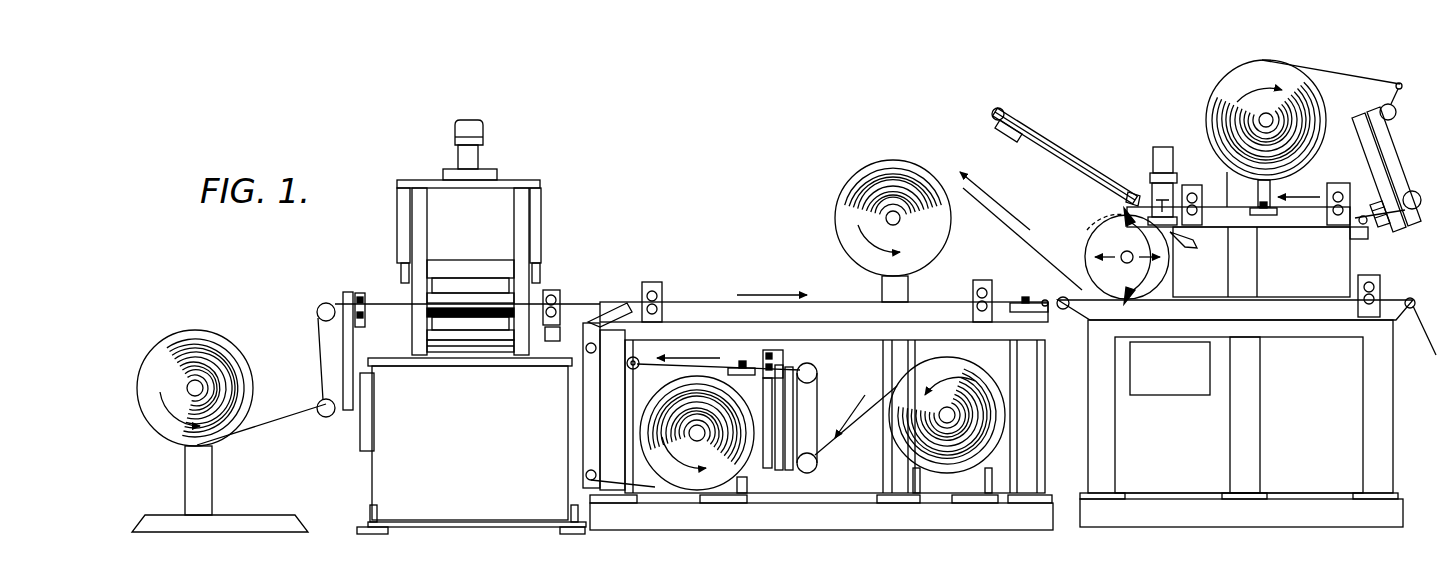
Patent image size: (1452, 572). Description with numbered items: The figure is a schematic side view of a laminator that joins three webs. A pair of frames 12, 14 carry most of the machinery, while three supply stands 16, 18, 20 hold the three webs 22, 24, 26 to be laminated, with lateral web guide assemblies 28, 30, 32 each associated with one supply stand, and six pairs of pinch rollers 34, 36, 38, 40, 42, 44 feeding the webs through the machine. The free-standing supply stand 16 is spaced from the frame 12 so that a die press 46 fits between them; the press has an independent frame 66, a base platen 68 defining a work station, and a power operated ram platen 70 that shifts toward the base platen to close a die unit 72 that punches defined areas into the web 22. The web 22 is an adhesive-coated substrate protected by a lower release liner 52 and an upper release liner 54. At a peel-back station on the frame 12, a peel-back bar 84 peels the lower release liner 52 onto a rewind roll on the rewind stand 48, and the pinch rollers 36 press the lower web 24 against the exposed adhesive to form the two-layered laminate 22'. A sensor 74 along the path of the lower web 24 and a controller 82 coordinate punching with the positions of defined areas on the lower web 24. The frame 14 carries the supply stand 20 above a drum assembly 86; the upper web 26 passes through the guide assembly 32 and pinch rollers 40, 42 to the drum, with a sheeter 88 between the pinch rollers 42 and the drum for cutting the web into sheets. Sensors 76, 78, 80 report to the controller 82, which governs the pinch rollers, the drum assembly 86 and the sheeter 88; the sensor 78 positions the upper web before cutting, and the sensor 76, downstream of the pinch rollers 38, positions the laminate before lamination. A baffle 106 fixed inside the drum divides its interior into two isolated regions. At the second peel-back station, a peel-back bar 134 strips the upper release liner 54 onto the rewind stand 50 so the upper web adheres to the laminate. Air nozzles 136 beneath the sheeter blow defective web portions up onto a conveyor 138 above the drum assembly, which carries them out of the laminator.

The frame 12 is at (948, 537).
The frame 14 is at (1178, 530).
The supply stand 16 is at (193, 380).
The supply stand 18 is at (952, 413).
The supply stand 20 is at (1262, 118).
The web 22 is at (398, 388).
The two-layered laminate 22' is at (792, 277).
The lower web 24 is at (853, 437).
The upper web 26 is at (1340, 66).
The lateral web guide assembly 28 is at (320, 300).
The lateral web guide assembly 30 is at (826, 388).
The lateral web guide assembly 32 is at (1410, 165).
The pinch rollers 34 is at (557, 290).
The pinch rollers 36 is at (659, 282).
The pinch rollers 38 is at (974, 281).
The pinch rollers 40 is at (1340, 181).
The pinch rollers 42 is at (1192, 183).
The pinch rollers 44 is at (1373, 274).
The die press 46 is at (508, 163).
The rewind stand 48 is at (703, 437).
The rewind stand 50 is at (888, 216).
The lower release liner 52 is at (650, 492).
The upper release liner 54 is at (968, 190).
The independent frame 66 is at (463, 508).
The base platen 68 is at (460, 358).
The ram platen 70 is at (458, 282).
The die unit 72 is at (485, 332).
The sensor 74 is at (738, 355).
The sensor 76 is at (1032, 292).
The sensor 78 is at (1272, 228).
The sensor 80 is at (1110, 195).
The controller 82 is at (1198, 396).
The peel-back bar 84 is at (612, 306).
The drum assembly 86 is at (1085, 215).
The sheeter 88 is at (1158, 145).
The baffle 106 is at (1128, 298).
The peel-back bar 134 is at (1077, 313).
The air nozzles 136 is at (1190, 250).
The conveyor 138 is at (1033, 130).